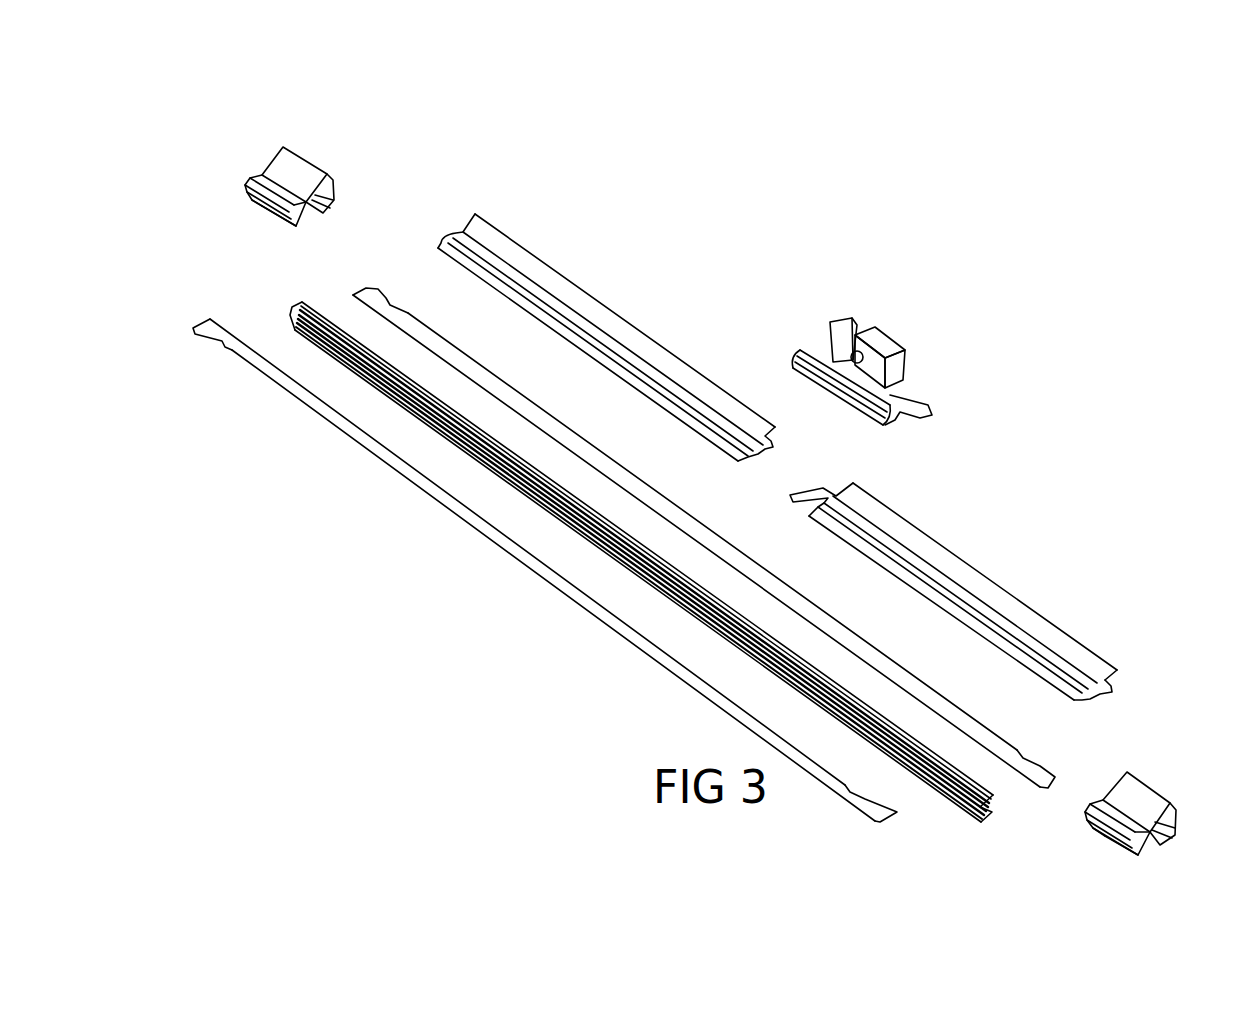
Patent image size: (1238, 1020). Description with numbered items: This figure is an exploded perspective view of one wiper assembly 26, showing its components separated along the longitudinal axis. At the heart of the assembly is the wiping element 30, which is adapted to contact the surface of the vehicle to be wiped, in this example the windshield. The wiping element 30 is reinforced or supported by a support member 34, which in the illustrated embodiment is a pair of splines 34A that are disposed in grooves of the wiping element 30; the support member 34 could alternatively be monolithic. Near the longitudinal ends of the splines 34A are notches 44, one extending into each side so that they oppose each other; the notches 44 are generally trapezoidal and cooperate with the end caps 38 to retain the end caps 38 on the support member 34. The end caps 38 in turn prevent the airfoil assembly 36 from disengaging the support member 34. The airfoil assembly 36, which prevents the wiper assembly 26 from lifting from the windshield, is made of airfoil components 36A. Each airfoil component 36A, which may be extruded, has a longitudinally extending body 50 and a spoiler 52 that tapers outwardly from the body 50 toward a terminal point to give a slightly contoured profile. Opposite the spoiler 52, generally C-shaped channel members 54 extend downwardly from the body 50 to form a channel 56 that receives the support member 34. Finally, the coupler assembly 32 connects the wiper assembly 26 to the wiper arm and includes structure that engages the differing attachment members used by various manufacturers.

The wiper assembly 26 is at (712, 455).
The wiping element 30 is at (885, 700).
The coupler assembly 32 is at (915, 350).
The support member 34 is at (648, 526).
The splines 34A is at (648, 555).
The airfoil assembly 36 is at (798, 472).
The airfoil component 36A is at (466, 213).
The end caps 38 is at (282, 140).
The notches 44 is at (1033, 762).
The body 50 is at (655, 372).
The spoiler 52 is at (595, 300).
The channel members 54 is at (600, 355).
The channel 56 is at (768, 452).